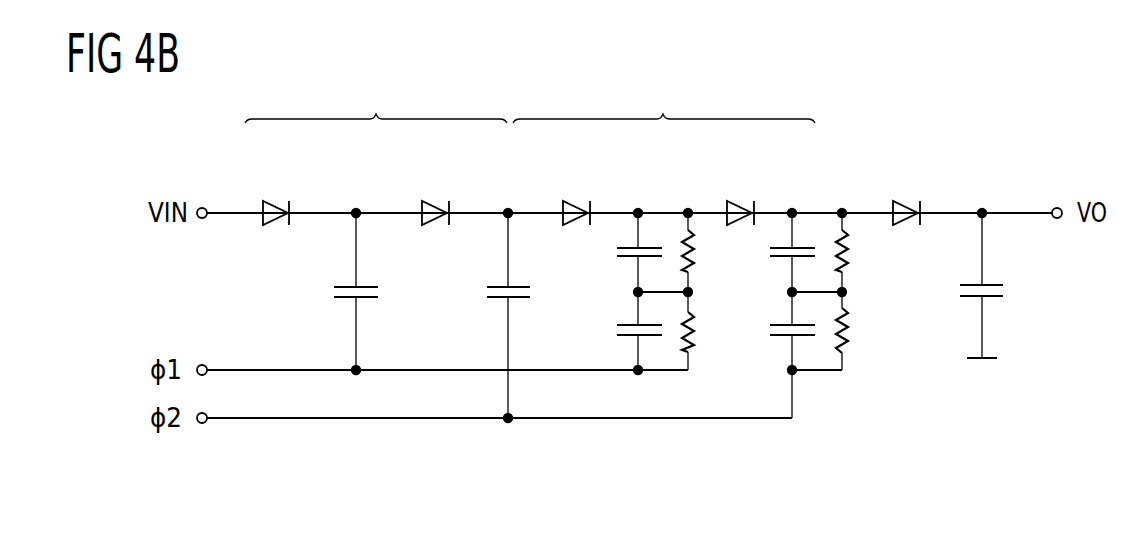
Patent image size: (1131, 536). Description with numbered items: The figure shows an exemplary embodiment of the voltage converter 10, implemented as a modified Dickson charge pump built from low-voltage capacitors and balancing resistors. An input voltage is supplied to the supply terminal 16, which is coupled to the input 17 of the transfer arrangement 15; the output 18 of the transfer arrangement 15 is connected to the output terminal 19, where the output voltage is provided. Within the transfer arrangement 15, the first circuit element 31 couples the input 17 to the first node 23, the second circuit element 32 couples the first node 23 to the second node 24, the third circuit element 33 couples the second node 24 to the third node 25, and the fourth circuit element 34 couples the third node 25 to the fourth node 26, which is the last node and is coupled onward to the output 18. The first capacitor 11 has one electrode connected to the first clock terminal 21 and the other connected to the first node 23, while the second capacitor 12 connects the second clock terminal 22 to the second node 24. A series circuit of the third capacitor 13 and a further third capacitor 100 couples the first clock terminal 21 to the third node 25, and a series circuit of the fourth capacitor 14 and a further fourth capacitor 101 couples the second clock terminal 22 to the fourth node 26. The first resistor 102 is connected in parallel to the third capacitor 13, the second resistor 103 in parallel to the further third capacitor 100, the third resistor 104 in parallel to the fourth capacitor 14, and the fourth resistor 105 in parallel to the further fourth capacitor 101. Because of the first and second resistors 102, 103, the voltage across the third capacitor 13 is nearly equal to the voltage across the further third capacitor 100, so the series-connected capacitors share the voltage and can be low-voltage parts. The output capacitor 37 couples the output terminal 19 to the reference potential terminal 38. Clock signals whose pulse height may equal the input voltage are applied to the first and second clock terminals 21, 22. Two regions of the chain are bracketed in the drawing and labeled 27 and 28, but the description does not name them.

The voltage converter 10 is at (990, 112).
The first capacitor 11 is at (334, 292).
The second capacitor 12 is at (487, 292).
The third capacitor 13 is at (617, 252).
The fourth capacitor 14 is at (770, 252).
The transfer arrangement 15 is at (270, 178).
The supply terminal 16 is at (202, 207).
The input 17 is at (266, 226).
The output 18 is at (922, 206).
The output terminal 19 is at (1058, 207).
The first clock terminal 21 is at (203, 364).
The second clock terminal 22 is at (208, 416).
The first node 23 is at (356, 207).
The second node 24 is at (508, 207).
The third node 25 is at (640, 207).
The fourth node 26 is at (792, 207).
The first charge pump stage 27 is at (376, 103).
The second charge pump stage 28 is at (664, 103).
The first circuit element 31 is at (290, 226).
The second circuit element 32 is at (438, 202).
The third circuit element 33 is at (578, 202).
The fourth circuit element 34 is at (740, 203).
The output capacitor 37 is at (970, 300).
The reference potential terminal 38 is at (987, 360).
The further third capacitor 100 is at (617, 330).
The further fourth capacitor 101 is at (780, 338).
The first resistor 102 is at (690, 272).
The second resistor 103 is at (690, 314).
The third resistor 104 is at (844, 272).
The fourth resistor 105 is at (844, 352).